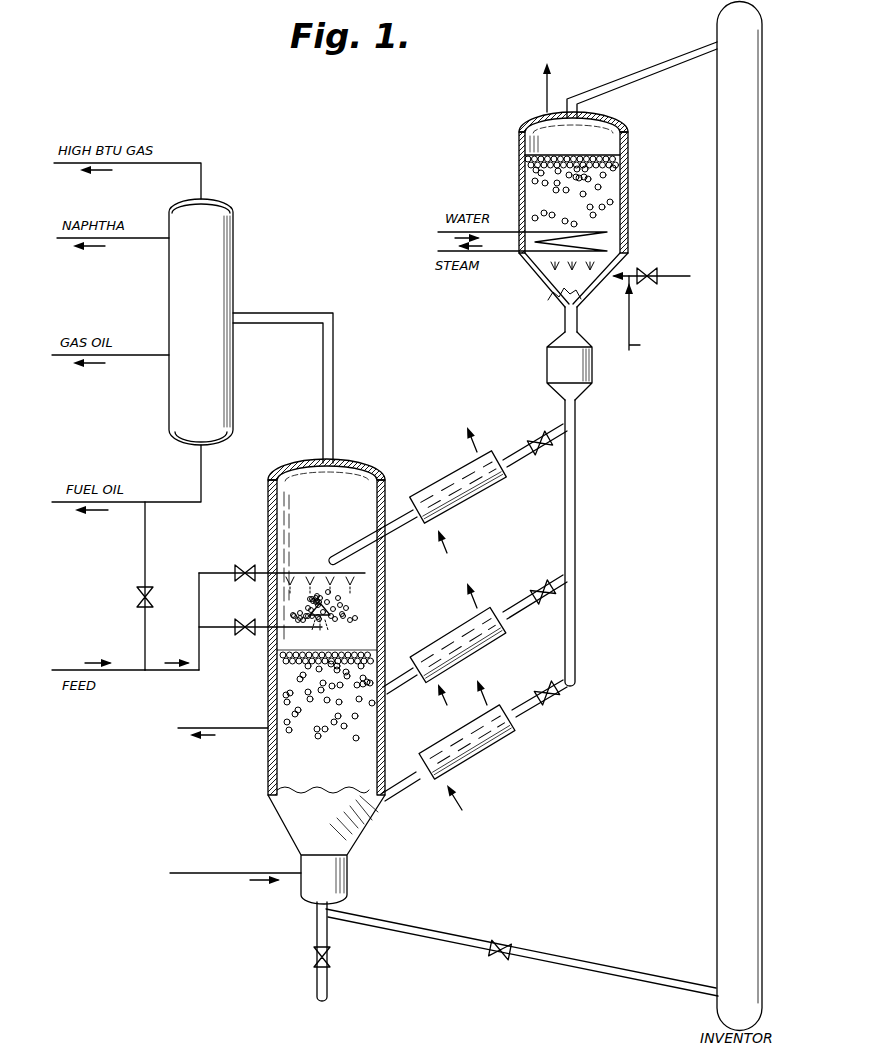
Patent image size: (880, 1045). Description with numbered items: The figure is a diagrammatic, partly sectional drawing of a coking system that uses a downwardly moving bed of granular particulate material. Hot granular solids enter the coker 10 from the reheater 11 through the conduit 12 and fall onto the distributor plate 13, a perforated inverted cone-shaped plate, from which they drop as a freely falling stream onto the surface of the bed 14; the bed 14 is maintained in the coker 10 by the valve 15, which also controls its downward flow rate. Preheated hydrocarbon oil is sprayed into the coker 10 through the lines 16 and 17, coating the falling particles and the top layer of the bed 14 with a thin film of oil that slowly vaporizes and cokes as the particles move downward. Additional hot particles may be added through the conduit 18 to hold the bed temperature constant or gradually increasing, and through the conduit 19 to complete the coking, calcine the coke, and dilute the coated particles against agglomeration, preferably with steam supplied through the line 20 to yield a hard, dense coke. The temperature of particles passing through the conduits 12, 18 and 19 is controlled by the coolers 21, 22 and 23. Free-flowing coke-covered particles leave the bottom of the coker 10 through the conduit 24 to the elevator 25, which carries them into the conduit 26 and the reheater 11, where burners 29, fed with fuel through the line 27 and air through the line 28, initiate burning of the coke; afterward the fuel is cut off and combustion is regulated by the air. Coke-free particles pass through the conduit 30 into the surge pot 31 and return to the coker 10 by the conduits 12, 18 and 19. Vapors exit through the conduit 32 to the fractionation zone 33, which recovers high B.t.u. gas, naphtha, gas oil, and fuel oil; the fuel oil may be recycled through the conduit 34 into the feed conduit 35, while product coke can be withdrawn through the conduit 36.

The coker 10 is at (302, 466).
The reheater 11 is at (519, 146).
The conduit 12 is at (396, 533).
The distributor plate 13 is at (345, 613).
The bed 14 is at (328, 710).
The valve 15 is at (500, 960).
The line 16 is at (231, 626).
The line 17 is at (226, 570).
The conduit 18 is at (410, 668).
The conduit 19 is at (402, 781).
The line 20 is at (196, 880).
The cooler 21 is at (458, 471).
The cooler 22 is at (505, 640).
The cooler 23 is at (515, 738).
The conduit 24 is at (408, 927).
The elevator 25 is at (762, 262).
The conduit 26 is at (657, 78).
The line 27 is at (667, 280).
The line 28 is at (629, 310).
The burners 29 is at (552, 283).
The conduit 30 is at (565, 320).
The surge pot 31 is at (547, 367).
The conduit 32 is at (335, 400).
The fractionation zone 33 is at (235, 236).
The conduit 34 is at (145, 558).
The conduit 35 is at (165, 672).
The conduit 36 is at (330, 985).